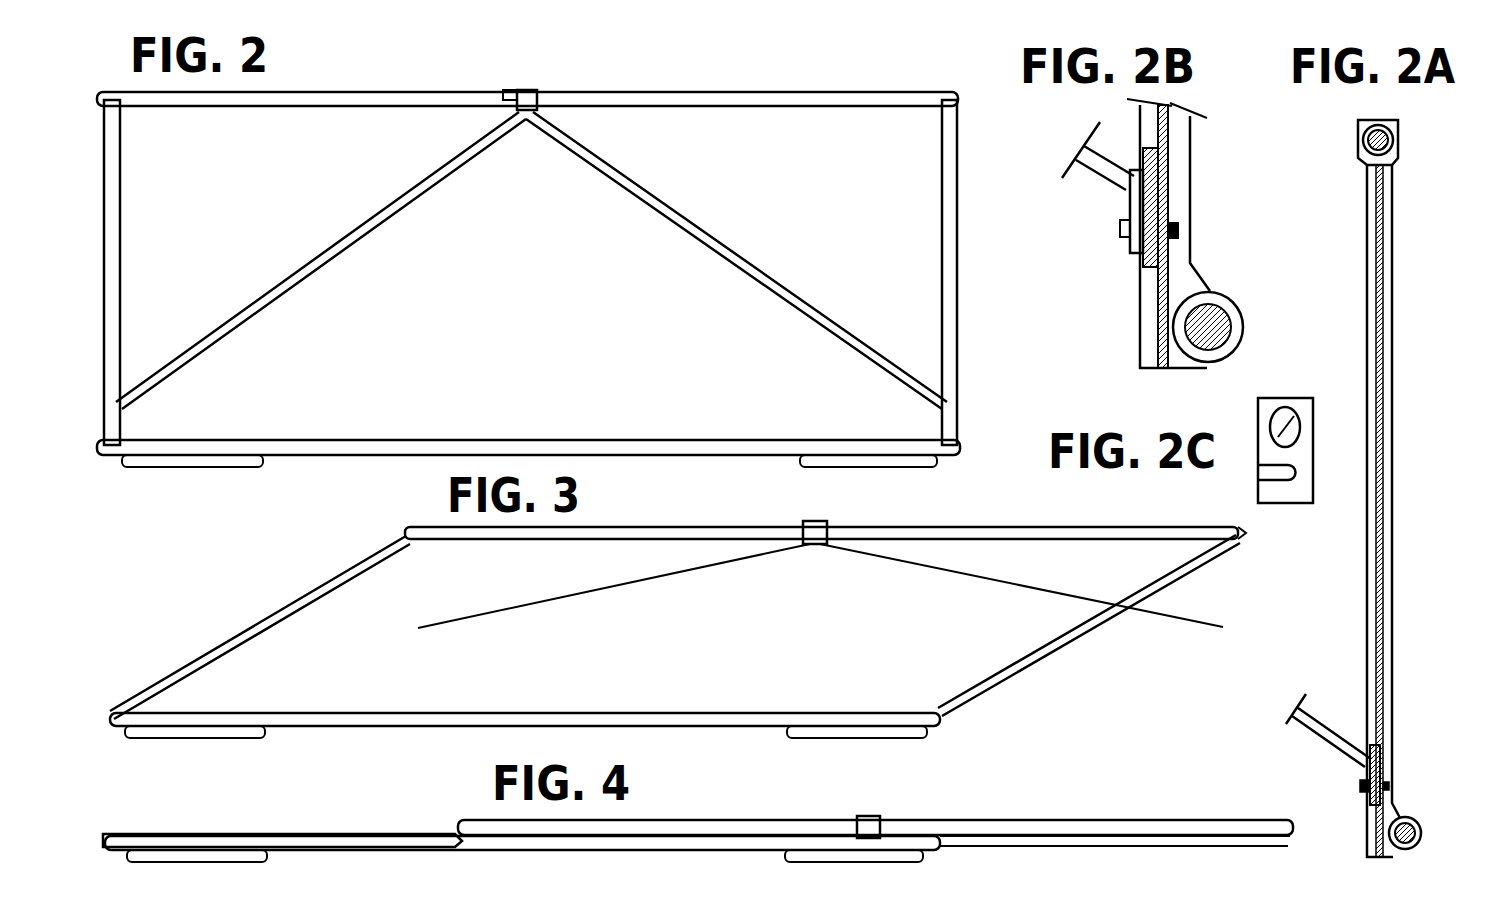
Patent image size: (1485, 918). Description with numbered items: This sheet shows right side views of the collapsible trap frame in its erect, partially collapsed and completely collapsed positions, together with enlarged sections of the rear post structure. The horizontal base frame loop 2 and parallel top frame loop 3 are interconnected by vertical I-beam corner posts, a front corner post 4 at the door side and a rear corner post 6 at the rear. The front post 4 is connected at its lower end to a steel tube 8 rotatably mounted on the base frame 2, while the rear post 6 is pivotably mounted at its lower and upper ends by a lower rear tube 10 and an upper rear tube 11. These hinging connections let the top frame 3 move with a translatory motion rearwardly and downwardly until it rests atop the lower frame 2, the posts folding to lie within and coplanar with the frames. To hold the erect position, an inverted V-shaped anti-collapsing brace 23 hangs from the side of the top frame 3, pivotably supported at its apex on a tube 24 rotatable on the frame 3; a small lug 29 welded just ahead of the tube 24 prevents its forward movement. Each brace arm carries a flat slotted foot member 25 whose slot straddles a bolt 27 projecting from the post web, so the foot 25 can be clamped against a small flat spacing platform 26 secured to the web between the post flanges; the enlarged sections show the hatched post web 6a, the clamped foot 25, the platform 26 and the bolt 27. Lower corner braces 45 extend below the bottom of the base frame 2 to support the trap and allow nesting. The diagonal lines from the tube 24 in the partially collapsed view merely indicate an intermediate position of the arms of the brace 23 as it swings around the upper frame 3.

In FIG. 2, the base frame loop 2 is at (425, 440).
In FIG. 3, the base frame loop 2 is at (490, 713).
In FIG. 4, the base frame loop 2 is at (630, 850).
In FIG. 2B, the base frame loop 2 is at (1215, 320).
In FIG. 2A, the base frame loop 2 is at (1415, 845).
In FIG. 2, the top frame loop 3 is at (745, 107).
In FIG. 3, the top frame loop 3 is at (1020, 540).
In FIG. 4, the top frame loop 3 is at (1033, 820).
In FIG. 2A, the top frame loop 3 is at (1398, 125).
In FIG. 2, the front corner post 4 is at (121, 160).
In FIG. 3, the front corner post 4 is at (275, 637).
In FIG. 4, the front corner post 4 is at (452, 835).
In FIG. 2, the rear corner post 6 is at (942, 195).
In FIG. 3, the rear corner post 6 is at (977, 668).
In FIG. 4, the rear corner post 6 is at (955, 838).
In FIG. 2B, the rear corner post 6 is at (1190, 180).
In FIG. 2A, the rear corner post 6 is at (1392, 355).
In FIG. 2B, the post plate 6a is at (1160, 320).
In FIG. 2A, the post plate 6a is at (1383, 448).
In FIG. 2B, the steel tube 8 is at (1220, 358).
In FIG. 2A, the lower rear tube 10 is at (1398, 818).
In FIG. 2A, the upper rear tube 11 is at (1395, 160).
In FIG. 2, the inverted V-shaped anti-collapsing brace 23 is at (360, 233).
In FIG. 3, the inverted V-shaped anti-collapsing brace 23 is at (578, 594).
In FIG. 2B, the inverted V-shaped anti-collapsing brace 23 is at (1097, 178).
In FIG. 2A, the inverted V-shaped anti-collapsing brace 23 is at (1312, 713).
In FIG. 2C, the inverted V-shaped anti-collapsing brace 23 is at (1285, 410).
In FIG. 2, the tube 24 is at (530, 90).
In FIG. 3, the tube 24 is at (815, 521).
In FIG. 4, the tube 24 is at (867, 816).
In FIG. 2B, the slotted foot member 25 is at (1130, 250).
In FIG. 2A, the slotted foot member 25 is at (1370, 795).
In FIG. 2C, the slotted foot member 25 is at (1315, 485).
In FIG. 2B, the spacing platform 26 is at (1148, 266).
In FIG. 2A, the spacing platform 26 is at (1372, 810).
In FIG. 2B, the bolt 27 is at (1120, 228).
In FIG. 2A, the bolt 27 is at (1362, 785).
In FIG. 2, the lug 29 is at (510, 90).
In FIG. 2, the lower corner brace 45 is at (176, 467).
In FIG. 3, the lower corner brace 45 is at (197, 738).
In FIG. 4, the lower corner brace 45 is at (188, 862).